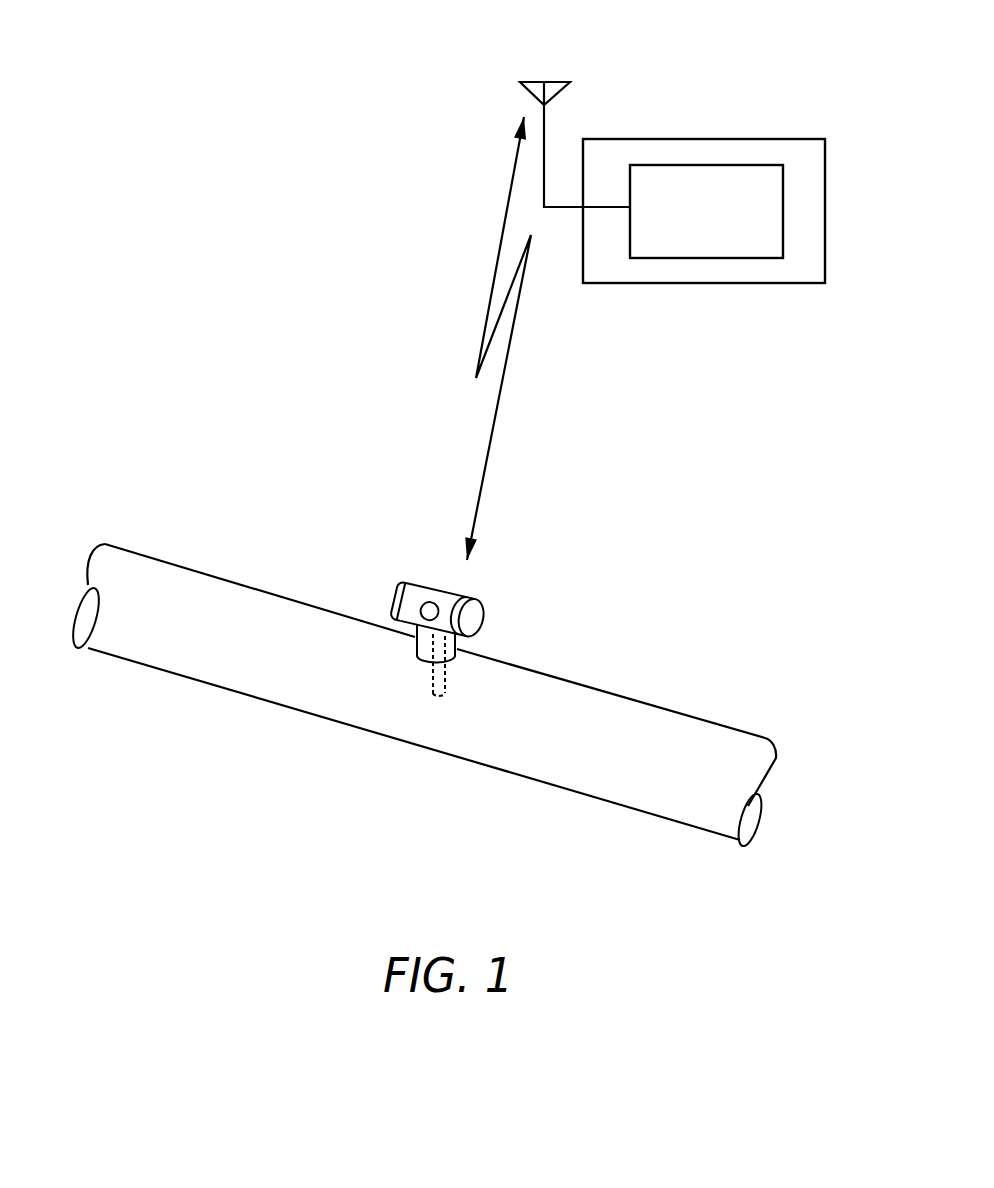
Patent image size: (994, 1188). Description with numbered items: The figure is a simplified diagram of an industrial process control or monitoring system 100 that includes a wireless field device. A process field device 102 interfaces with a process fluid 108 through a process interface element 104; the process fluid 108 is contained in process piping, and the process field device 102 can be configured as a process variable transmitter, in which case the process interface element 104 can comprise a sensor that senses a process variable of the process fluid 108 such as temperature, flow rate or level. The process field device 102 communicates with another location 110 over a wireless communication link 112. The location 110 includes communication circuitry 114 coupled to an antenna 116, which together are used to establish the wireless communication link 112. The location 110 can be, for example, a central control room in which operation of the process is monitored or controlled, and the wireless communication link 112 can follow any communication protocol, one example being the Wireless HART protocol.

The industrial process control or monitoring system 100 is at (335, 335).
The process field device 102 is at (468, 618).
The process interface element 104 is at (443, 673).
The process fluid 108 is at (238, 644).
The location 110 is at (693, 139).
The wireless communication link 112 is at (498, 412).
The communication circuitry 114 is at (783, 216).
The antenna 116 is at (523, 83).